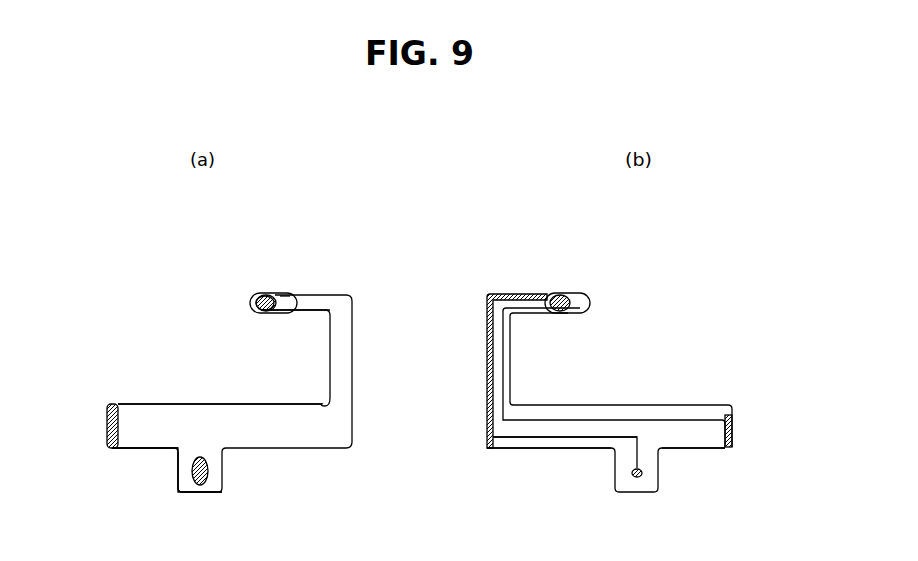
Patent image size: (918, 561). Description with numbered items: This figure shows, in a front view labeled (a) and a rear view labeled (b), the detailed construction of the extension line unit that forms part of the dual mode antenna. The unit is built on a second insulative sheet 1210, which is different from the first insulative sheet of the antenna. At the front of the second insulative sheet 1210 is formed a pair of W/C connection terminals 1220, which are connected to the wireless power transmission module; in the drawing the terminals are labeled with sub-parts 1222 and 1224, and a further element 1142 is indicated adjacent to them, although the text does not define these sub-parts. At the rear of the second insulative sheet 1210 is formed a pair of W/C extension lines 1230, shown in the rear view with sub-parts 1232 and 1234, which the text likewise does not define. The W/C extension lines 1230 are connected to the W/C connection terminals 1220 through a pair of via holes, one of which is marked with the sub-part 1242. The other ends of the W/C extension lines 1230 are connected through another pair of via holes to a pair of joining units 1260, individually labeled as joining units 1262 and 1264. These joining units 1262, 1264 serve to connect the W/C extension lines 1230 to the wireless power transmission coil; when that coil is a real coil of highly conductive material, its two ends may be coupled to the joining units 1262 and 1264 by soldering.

The second insulative sheet 1210 is at (298, 442).
The W/C connection terminals 1220 is at (320, 257).
The light emitting chip 1222 is at (267, 302).
The electrode pad 1224 is at (287, 296).
The cathode layer 1142 is at (262, 311).
The first conductive layer 1242 is at (572, 298).
The joining units 1260 is at (83, 465).
The joining unit 1262 is at (115, 452).
The joining unit 1264 is at (193, 478).
The W/C extension lines 1230 is at (595, 493).
The first insulating layer 1232 is at (573, 422).
The second insulating layer 1234 is at (525, 448).